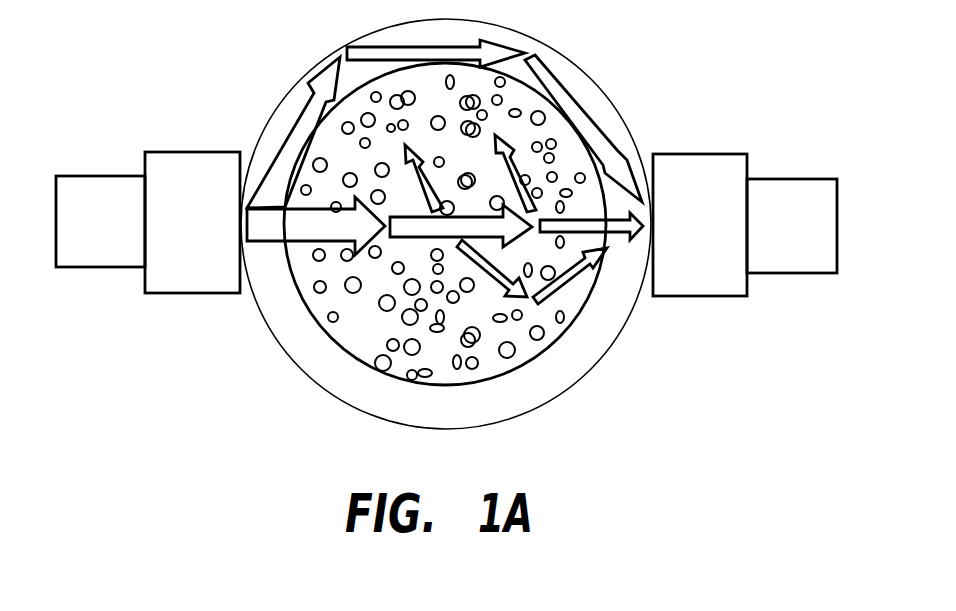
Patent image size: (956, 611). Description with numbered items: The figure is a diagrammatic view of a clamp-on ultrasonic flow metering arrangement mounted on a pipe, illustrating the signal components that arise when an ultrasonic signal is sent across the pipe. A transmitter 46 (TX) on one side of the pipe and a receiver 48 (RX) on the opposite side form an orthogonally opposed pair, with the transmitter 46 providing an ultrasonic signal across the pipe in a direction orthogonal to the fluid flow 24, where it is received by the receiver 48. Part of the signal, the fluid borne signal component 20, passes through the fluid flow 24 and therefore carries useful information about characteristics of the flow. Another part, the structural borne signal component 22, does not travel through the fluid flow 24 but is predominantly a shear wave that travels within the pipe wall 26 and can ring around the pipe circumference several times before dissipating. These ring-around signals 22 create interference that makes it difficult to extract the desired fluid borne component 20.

The fluid borne signal component 20 is at (607, 237).
The structural borne signal component 22 is at (583, 112).
The fluid flow 24 is at (370, 339).
The pipe wall 26 is at (297, 78).
The transmitter 46 is at (107, 176).
The receiver 48 is at (812, 179).